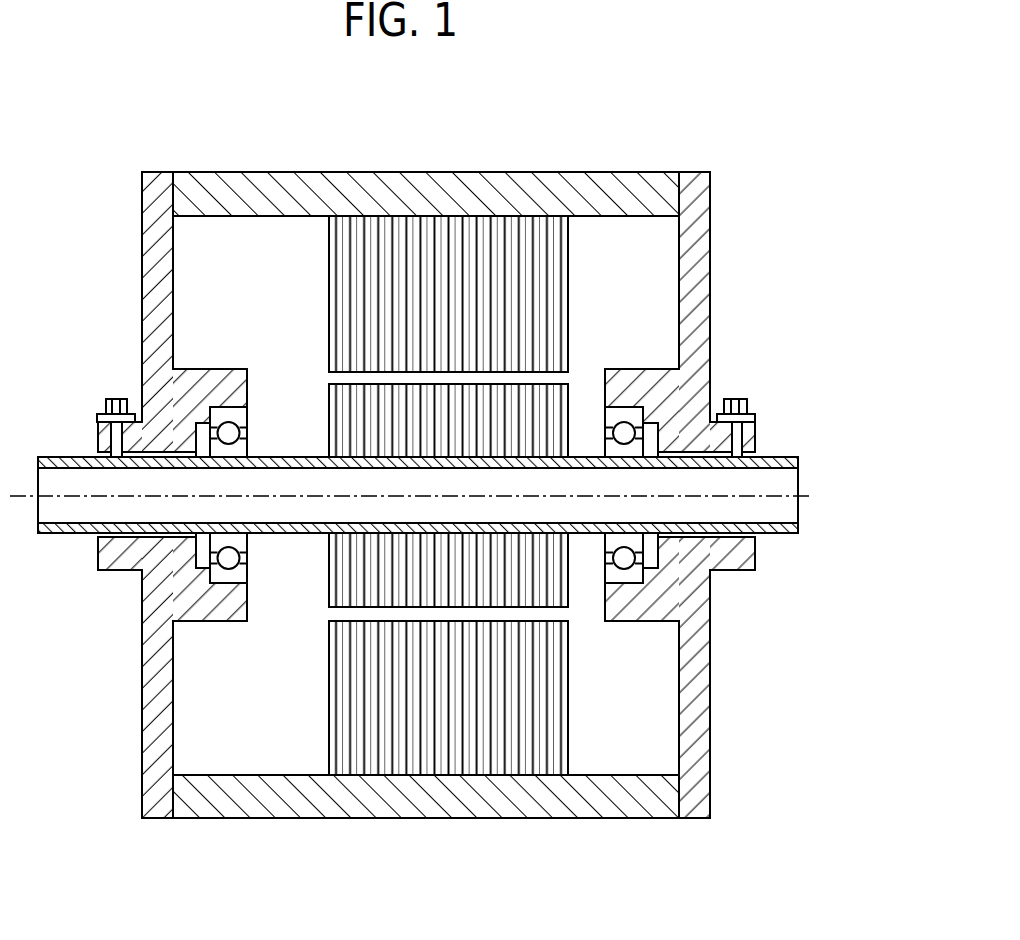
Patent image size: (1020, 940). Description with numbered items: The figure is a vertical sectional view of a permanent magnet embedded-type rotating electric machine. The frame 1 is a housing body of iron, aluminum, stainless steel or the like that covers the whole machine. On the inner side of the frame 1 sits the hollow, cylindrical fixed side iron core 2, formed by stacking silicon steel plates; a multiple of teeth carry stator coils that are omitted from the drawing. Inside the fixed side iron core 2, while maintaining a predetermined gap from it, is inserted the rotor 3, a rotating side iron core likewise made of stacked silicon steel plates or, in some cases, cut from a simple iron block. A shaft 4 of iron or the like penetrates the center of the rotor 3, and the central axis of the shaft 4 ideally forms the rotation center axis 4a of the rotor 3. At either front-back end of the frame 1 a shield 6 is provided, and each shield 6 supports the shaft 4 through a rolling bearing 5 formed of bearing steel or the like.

The frame 1 is at (593, 172).
The fixed side iron core 2 is at (569, 262).
The rotor 3 is at (582, 384).
The shaft 4 is at (304, 457).
The rotation center axis 4a is at (74, 494).
The rolling bearing 5 is at (248, 410).
The shield 6 is at (142, 289).